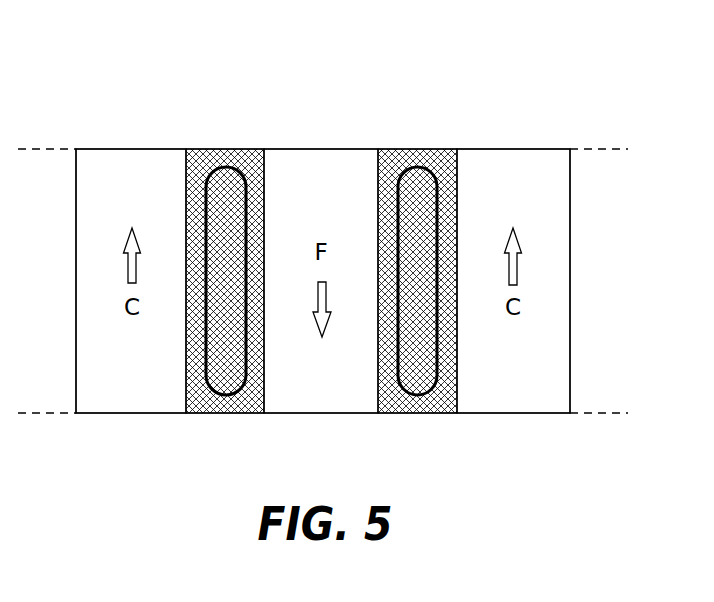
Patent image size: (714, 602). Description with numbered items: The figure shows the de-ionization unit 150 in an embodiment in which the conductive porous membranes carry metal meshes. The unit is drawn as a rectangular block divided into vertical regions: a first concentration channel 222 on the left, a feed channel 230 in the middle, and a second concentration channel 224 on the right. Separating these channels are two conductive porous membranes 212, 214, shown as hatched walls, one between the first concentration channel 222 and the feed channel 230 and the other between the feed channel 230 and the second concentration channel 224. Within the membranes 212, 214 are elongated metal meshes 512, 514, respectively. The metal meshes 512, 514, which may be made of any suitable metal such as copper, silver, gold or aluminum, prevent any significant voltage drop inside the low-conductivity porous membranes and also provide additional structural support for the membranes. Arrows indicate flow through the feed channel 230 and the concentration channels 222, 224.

The de-ionization unit 150 is at (536, 47).
The first concentration channel 222 is at (111, 195).
The feed channel 230 is at (301, 195).
The second concentration channel 224 is at (493, 195).
The conductive porous membrane 212 is at (233, 148).
The conductive porous membrane 214 is at (427, 148).
The metal mesh 512 is at (207, 393).
The metal mesh 514 is at (398, 393).